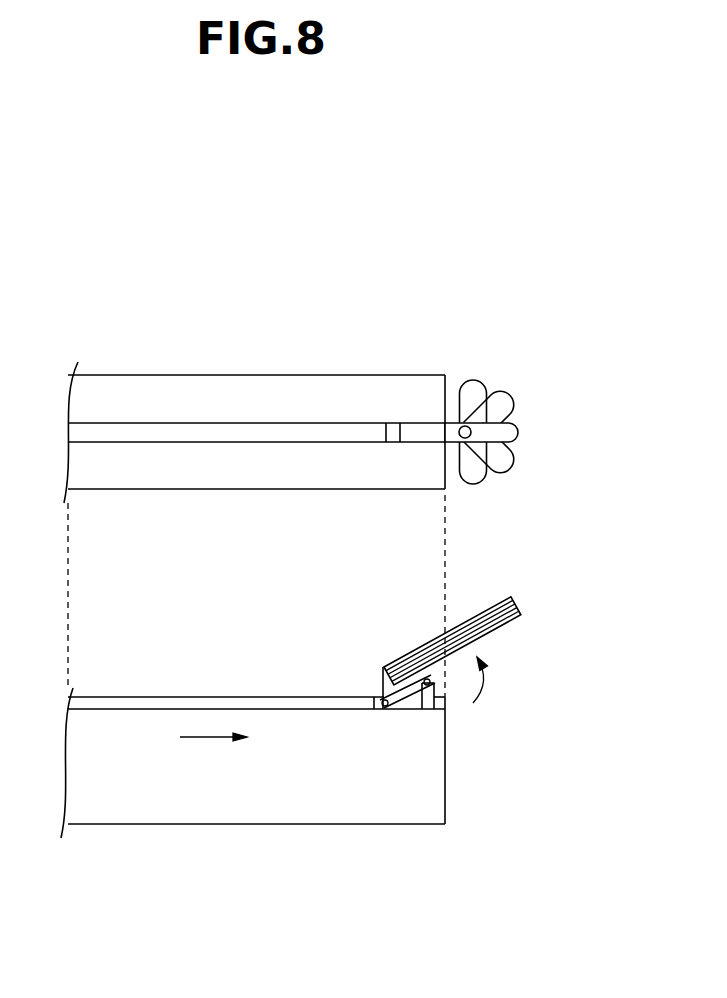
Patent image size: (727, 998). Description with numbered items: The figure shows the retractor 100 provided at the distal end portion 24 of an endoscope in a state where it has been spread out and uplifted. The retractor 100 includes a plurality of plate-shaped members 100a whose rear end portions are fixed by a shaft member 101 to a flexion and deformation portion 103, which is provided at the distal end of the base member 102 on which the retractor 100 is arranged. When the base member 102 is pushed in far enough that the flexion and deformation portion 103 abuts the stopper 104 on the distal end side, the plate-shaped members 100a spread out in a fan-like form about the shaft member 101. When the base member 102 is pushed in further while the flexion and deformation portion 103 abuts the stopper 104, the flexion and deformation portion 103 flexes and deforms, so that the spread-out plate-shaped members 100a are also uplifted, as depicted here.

The distal end portion 24 is at (393, 282).
The retractor 100 is at (477, 472).
The plate-shaped members 100a is at (507, 432).
The shaft member 101 is at (452, 432).
The base member 102 is at (160, 430).
The flexion and deformation portion 103 is at (403, 694).
The stopper 104 is at (445, 703).